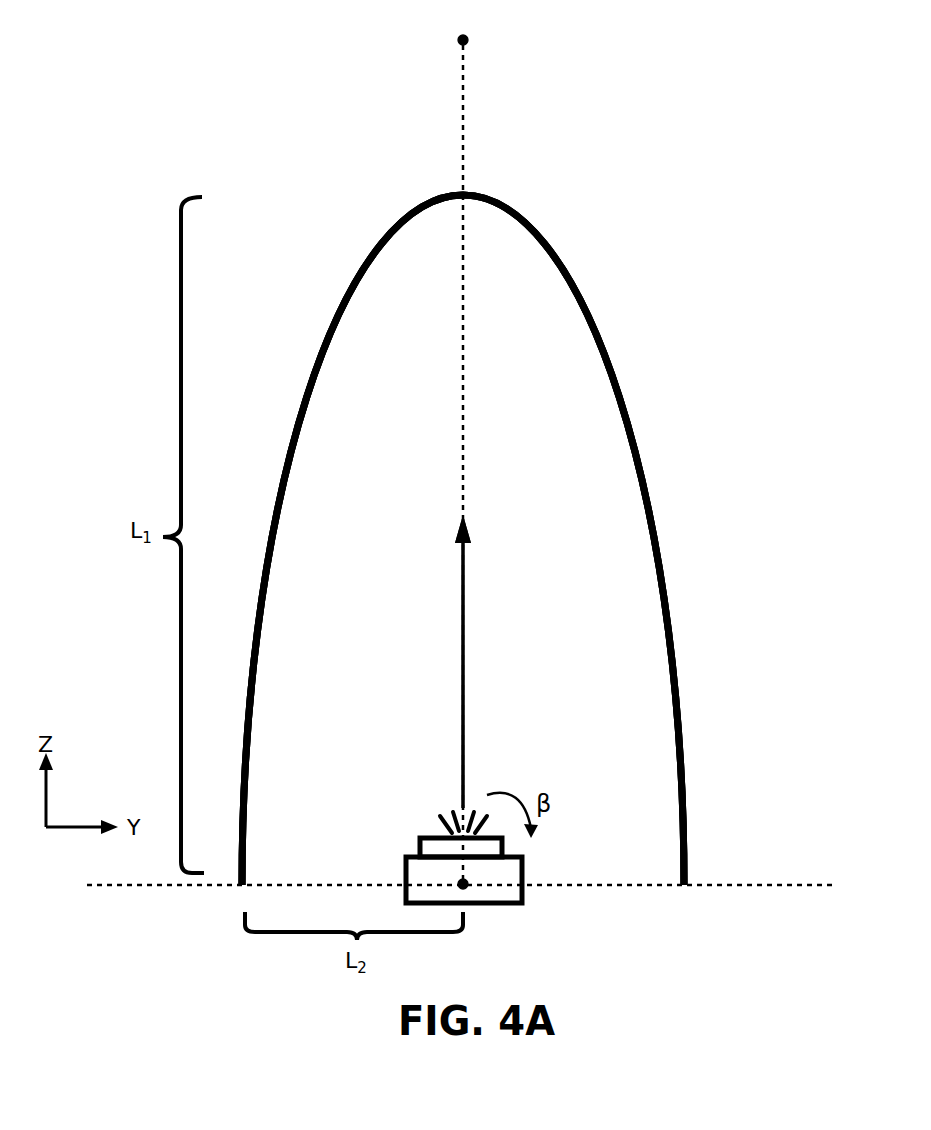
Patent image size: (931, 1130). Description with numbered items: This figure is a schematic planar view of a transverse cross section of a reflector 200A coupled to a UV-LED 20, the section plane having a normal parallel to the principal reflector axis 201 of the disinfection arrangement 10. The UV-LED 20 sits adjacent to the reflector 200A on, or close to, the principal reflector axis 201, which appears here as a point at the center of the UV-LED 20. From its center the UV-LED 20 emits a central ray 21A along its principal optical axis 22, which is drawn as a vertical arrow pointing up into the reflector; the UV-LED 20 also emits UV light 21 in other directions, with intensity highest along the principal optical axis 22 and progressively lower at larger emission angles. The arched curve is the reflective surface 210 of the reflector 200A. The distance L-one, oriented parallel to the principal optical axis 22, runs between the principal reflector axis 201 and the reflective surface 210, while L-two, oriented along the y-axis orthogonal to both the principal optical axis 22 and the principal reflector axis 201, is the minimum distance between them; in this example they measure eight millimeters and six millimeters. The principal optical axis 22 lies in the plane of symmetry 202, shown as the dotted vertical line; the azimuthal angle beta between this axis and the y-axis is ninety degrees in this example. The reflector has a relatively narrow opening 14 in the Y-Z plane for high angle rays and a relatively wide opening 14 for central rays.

The lighting device 10 is at (308, 96).
The plane of symmetry 202 is at (463, 133).
The opening 14 is at (417, 279).
The reflector 200A is at (345, 298).
The reflective surface 210 is at (306, 418).
The central ray 21A is at (460, 525).
The principal optical axis 22 is at (463, 735).
The UV light 21 is at (445, 800).
The UV-LED 20 is at (406, 870).
The principal reflector axis 201 is at (470, 888).